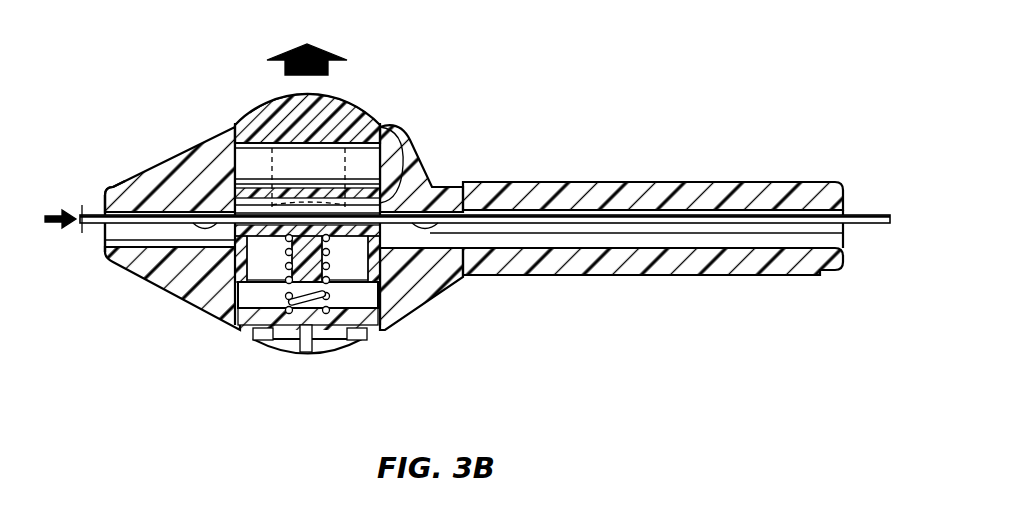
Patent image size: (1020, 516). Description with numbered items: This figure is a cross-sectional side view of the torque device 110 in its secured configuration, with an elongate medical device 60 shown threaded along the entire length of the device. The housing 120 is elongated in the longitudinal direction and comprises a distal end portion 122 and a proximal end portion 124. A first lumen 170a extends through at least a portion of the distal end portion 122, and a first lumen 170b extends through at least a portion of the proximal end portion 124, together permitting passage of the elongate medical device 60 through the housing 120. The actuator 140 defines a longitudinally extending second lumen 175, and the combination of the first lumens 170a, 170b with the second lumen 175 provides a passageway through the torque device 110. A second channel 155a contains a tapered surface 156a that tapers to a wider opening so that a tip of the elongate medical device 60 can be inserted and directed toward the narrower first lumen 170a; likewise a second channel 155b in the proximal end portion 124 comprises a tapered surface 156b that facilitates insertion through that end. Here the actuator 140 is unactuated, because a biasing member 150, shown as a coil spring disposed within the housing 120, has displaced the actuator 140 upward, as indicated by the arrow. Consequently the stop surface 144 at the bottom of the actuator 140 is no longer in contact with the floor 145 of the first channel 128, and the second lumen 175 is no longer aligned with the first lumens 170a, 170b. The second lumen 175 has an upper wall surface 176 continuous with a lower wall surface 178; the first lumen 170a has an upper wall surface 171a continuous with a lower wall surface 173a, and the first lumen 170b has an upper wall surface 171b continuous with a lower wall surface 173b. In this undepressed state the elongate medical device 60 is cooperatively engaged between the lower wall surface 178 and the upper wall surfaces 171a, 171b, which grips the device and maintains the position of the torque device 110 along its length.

The elongate medical device 60 is at (84, 234).
The torque device 110 is at (441, 103).
The housing 120 is at (480, 182).
The distal end portion 122 is at (118, 187).
The proximal end portion 124 is at (745, 182).
The first channel 128 is at (237, 125).
The actuator 140 is at (348, 97).
The stop surface 144 is at (245, 335).
The floor 145 is at (350, 355).
The biasing member 150 is at (306, 353).
The second channel 155a is at (108, 233).
The second channel 155b is at (597, 237).
The tapered surface 156a is at (122, 235).
The tapered surface 156b is at (493, 241).
The first lumen 170a is at (185, 262).
The first lumen 170b is at (415, 275).
The upper wall surface 171a is at (210, 222).
The upper wall surface 171b is at (441, 213).
The lower wall surface 173a is at (205, 295).
The lower wall surface 173b is at (418, 237).
The second lumen 175 is at (240, 200).
The upper wall surface 176 is at (393, 180).
The lower wall surface 178 is at (398, 290).